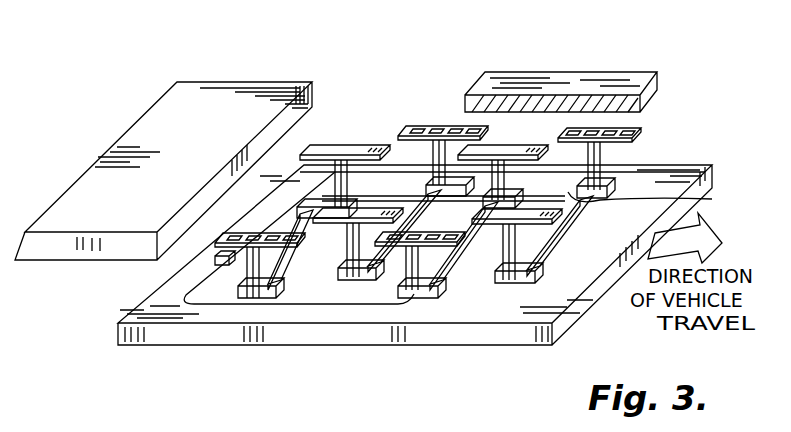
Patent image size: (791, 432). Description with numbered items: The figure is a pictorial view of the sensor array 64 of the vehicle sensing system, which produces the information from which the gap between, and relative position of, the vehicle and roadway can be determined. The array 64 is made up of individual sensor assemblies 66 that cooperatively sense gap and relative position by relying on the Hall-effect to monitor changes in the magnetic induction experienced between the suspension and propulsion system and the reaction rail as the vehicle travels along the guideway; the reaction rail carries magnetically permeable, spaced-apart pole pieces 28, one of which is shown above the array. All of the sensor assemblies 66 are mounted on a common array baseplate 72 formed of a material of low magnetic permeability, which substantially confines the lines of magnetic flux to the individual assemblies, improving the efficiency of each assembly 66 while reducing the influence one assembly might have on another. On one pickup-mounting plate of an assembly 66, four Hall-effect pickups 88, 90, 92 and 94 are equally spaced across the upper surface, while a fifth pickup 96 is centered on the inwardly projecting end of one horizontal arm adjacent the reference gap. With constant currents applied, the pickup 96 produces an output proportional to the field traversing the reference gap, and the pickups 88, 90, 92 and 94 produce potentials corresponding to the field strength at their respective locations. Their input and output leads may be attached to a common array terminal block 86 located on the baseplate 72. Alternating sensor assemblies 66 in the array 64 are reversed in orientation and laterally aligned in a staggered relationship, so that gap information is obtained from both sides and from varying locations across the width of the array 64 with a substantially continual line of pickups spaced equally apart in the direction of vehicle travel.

The pole piece 28 is at (155, 123).
The array 64 is at (390, 96).
The sensor assembly 66 is at (430, 127).
The array baseplate 72 is at (557, 333).
The array terminal block 86 is at (215, 258).
The Hall-effect pickup 88 is at (636, 140).
The Hall-effect pickup 90 is at (612, 131).
The Hall-effect pickup 92 is at (594, 130).
The Hall-effect pickup 94 is at (572, 130).
The Hall-effect pickup 96 is at (471, 238).